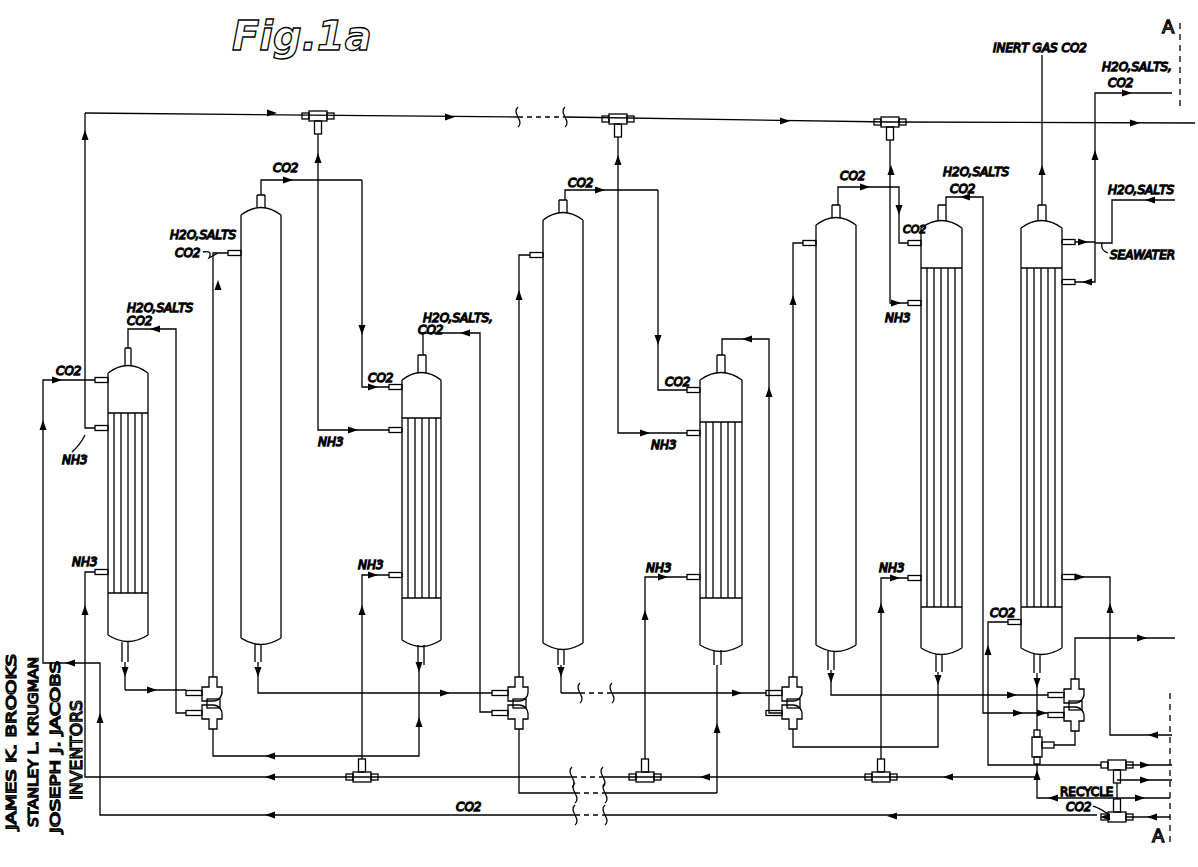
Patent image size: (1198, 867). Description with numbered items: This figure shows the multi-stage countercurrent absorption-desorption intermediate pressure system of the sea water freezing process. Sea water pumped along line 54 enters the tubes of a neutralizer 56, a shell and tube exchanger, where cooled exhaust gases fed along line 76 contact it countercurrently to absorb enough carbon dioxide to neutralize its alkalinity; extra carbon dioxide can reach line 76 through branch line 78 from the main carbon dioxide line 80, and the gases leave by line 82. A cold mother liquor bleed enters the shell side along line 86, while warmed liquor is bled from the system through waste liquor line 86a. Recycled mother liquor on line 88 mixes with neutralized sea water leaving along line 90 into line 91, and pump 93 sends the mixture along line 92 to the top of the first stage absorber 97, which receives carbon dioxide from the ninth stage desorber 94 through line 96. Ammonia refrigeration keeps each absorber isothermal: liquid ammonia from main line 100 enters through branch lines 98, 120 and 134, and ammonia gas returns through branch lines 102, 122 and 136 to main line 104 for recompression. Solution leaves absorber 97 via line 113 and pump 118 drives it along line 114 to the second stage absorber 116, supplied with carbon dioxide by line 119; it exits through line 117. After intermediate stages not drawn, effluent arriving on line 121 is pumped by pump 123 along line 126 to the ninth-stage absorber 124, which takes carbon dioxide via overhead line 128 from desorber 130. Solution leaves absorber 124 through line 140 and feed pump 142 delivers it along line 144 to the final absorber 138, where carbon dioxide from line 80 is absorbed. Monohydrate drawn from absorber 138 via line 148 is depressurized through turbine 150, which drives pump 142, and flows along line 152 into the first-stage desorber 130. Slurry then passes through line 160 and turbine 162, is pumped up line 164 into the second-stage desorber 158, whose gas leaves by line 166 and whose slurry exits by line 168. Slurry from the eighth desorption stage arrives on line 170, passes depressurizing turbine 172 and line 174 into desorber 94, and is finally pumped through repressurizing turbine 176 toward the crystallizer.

The main line 104 is at (84, 305).
The main carbon dioxide line 80 is at (43, 510).
The main line 100 is at (85, 755).
The tenth and final absorber 138 is at (148, 393).
The line 144 is at (171, 670).
The line 148 is at (133, 693).
The turbine 150 is at (218, 683).
The feed pump 142 is at (220, 717).
The line 152 is at (218, 493).
The first-stage desorber 130 is at (275, 505).
The overhead line 128 is at (363, 257).
The branch line 136 is at (318, 308).
The ninth-stage absorber 124 is at (437, 392).
The branch line 134 is at (363, 658).
The line 160 is at (293, 693).
The line 140 is at (420, 745).
The line 126 is at (479, 652).
The turbine 162 is at (527, 687).
The pump 123 is at (527, 718).
The line 164 is at (521, 487).
The second-stage desorber 158 is at (583, 512).
The line 166 is at (565, 190).
The line 119 is at (660, 255).
The branch line 122 is at (618, 412).
The second stage absorber 116 is at (702, 405).
The branch line 120 is at (648, 660).
The line 168 is at (573, 690).
The line 170 is at (668, 693).
The line 121 is at (530, 780).
The line 117 is at (720, 758).
The line 174 is at (769, 330).
The line 114 is at (769, 520).
The depressurizing turbine 172 is at (800, 687).
The pump 118 is at (798, 720).
The line 113 is at (937, 724).
The branch line 98 is at (882, 676).
The ninth stage desorber 94 is at (856, 375).
The line 96 is at (882, 190).
The branch line 102 is at (890, 255).
The first stage carbon dioxide absorber 97 is at (960, 247).
The line 92 is at (983, 365).
The neutralizer 56 is at (1062, 352).
The line 82 is at (1044, 92).
The waste liquor line 86a is at (1096, 162).
The line 54 is at (1112, 220).
The line 86 is at (1112, 622).
The line 90 is at (1041, 674).
The repressurizing turbine 176 is at (1086, 690).
The pump 93 is at (1088, 712).
The line 91 is at (1043, 750).
The line 88 is at (1030, 790).
The line 76 is at (990, 668).
The branch line 78 is at (1124, 813).